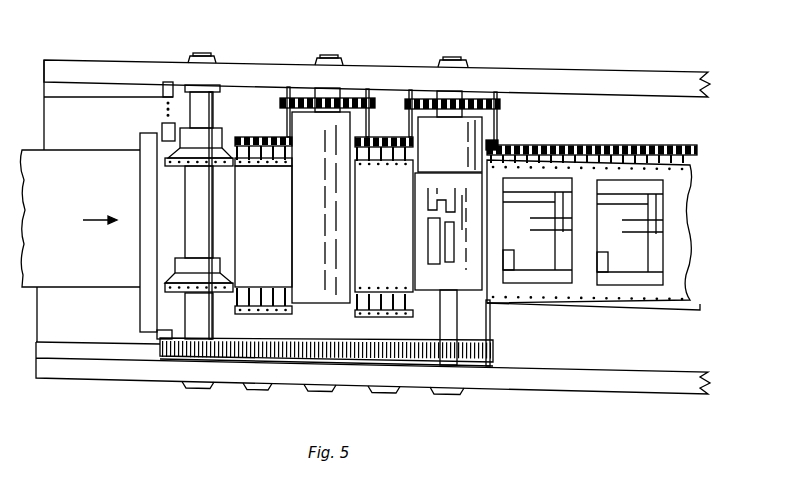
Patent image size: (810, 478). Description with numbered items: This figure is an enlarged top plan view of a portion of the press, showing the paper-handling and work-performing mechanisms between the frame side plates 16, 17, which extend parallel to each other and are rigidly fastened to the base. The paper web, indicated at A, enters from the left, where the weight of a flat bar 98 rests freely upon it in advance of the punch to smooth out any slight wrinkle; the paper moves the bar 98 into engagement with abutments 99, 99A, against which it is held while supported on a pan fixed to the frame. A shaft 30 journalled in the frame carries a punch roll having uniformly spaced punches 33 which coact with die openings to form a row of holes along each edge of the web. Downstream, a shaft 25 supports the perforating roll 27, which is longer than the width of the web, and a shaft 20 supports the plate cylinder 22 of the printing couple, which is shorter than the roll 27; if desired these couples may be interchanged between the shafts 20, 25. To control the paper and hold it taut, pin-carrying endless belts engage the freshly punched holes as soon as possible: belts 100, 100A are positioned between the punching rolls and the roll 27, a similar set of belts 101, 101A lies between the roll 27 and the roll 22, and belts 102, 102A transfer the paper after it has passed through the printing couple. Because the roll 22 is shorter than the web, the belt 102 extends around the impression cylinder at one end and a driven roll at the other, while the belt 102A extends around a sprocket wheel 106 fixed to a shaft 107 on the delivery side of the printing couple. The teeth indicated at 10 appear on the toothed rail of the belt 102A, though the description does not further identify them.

The side plate 17 is at (106, 64).
The side plate 16 is at (121, 370).
The shaft 30 is at (206, 56).
The punches 33 is at (182, 164).
The shaft 25 is at (331, 58).
The shaft 20 is at (476, 73).
The perforating roll 27 is at (321, 207).
The plate cylinder 22 is at (448, 241).
The flat bar 98 is at (143, 200).
The abutment 99 is at (158, 341).
The abutment 99A is at (162, 128).
The endless belt 100 is at (268, 306).
The endless belt 100A is at (257, 137).
The endless belt 101 is at (387, 313).
The endless belt 101A is at (383, 147).
The endless belt 102 is at (602, 305).
The endless belt 102A is at (595, 152).
The teeth 10 is at (529, 150).
The sprocket wheel 106 is at (498, 140).
The shaft 107 is at (500, 100).
The workpiece A is at (78, 151).